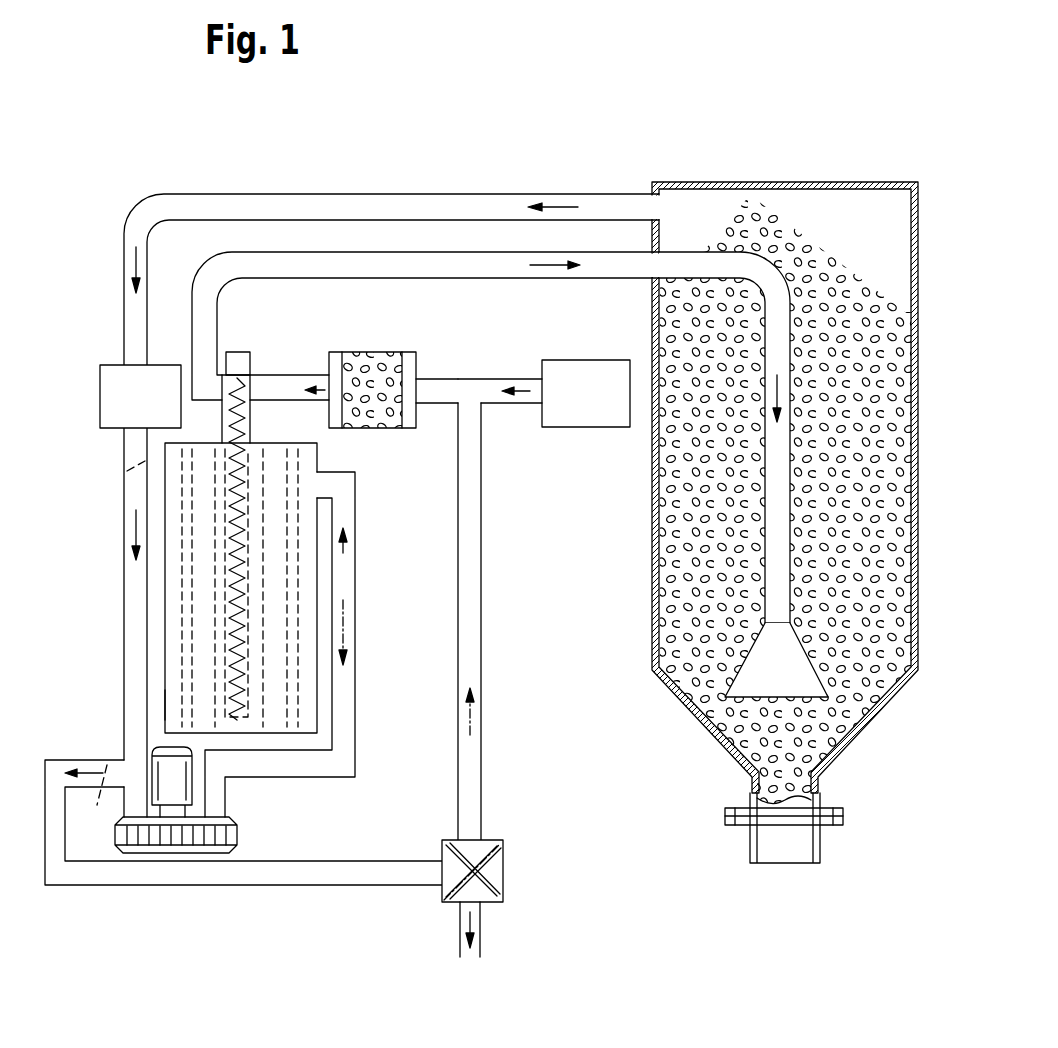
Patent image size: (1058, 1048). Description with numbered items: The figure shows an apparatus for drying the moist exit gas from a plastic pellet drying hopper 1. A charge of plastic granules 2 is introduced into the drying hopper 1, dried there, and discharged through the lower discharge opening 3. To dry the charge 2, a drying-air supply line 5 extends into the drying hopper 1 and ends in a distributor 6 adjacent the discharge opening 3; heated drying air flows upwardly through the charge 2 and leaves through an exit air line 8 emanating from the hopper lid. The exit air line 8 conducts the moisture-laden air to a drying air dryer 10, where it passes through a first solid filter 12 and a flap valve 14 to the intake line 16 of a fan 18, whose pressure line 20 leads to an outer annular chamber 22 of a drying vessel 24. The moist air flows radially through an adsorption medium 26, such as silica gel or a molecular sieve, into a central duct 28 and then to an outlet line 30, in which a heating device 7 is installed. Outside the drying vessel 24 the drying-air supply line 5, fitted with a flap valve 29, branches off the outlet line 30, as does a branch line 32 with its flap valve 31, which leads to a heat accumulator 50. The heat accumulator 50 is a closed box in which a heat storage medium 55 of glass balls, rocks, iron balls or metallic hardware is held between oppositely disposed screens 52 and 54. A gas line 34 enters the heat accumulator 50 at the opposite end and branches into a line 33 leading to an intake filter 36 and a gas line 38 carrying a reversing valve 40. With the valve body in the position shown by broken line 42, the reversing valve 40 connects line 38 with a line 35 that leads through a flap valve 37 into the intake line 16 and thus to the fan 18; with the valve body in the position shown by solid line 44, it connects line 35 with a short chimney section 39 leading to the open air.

The drying hopper 1 is at (878, 183).
The charge of plastic granules 2 is at (828, 248).
The lower discharge opening 3 is at (778, 850).
The drying-air supply line 5 is at (628, 262).
The distributor 6 is at (812, 715).
The heating device 7 is at (222, 498).
The exit air line 8 is at (513, 197).
The drying air dryer 10 is at (112, 547).
The first solid filter 12 is at (100, 394).
The flap valve 14 is at (124, 468).
The intake line 16 is at (124, 733).
The fan 18 is at (237, 835).
The pressure line 20 is at (343, 770).
The outer annular chamber 22 is at (172, 614).
The drying vessel 24 is at (152, 700).
The adsorption medium 26 is at (192, 655).
The central duct 28 is at (250, 723).
The flap valve 29 is at (217, 392).
The outlet line 30 is at (222, 578).
The flap valve 31 is at (300, 395).
The branch line 32 is at (268, 383).
The line 33 is at (504, 378).
The gas line 34 is at (440, 378).
The line 35 is at (212, 884).
The intake filter 36 is at (592, 375).
The flap valve 37 is at (86, 803).
The gas line 38 is at (484, 748).
The short chimney section 39 is at (468, 958).
The reversing valve 40 is at (502, 898).
The valve body position (broken line) 42 is at (478, 870).
The valve body position (solid line) 44 is at (485, 905).
The heat accumulator 50 is at (360, 335).
The screen 52 is at (335, 352).
The screen 54 is at (414, 354).
The heat storage medium 55 is at (385, 360).